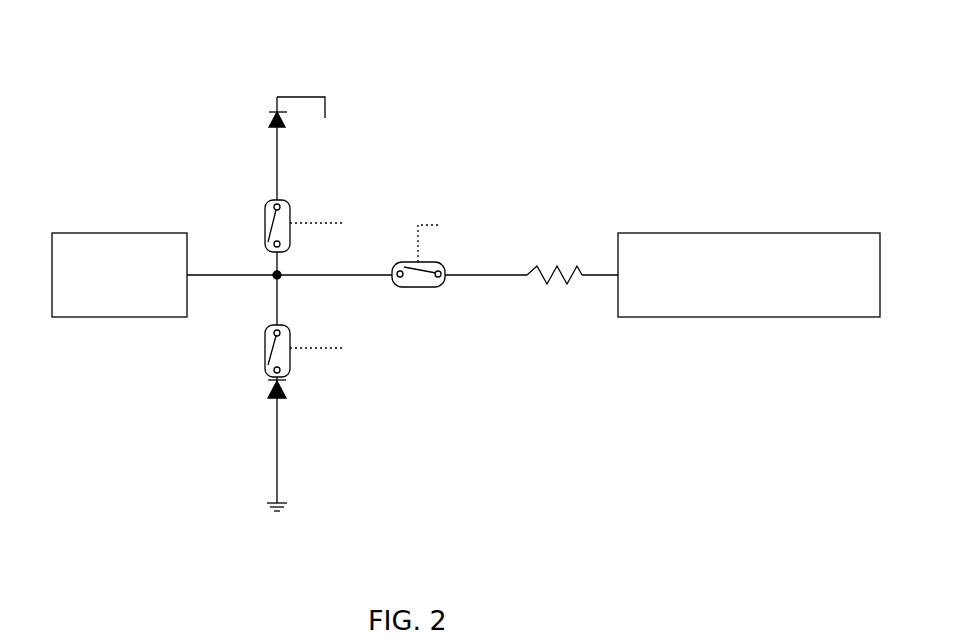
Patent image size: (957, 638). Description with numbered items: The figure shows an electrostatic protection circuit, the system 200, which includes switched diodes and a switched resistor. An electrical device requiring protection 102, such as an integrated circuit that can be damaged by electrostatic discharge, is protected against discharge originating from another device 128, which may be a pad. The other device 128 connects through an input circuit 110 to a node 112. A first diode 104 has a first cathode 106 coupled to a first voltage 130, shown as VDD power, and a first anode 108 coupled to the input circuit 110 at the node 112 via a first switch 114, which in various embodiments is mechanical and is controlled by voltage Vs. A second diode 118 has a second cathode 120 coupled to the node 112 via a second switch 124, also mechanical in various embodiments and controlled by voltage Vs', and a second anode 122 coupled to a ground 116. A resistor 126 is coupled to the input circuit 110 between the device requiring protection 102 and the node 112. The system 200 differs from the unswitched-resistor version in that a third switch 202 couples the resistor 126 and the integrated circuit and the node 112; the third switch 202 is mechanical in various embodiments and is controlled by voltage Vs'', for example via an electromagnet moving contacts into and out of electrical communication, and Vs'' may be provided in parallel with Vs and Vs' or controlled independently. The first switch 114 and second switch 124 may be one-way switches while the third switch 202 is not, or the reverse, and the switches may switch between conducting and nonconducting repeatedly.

The system 200 is at (466, 282).
The electrical device requiring protection 102 is at (670, 233).
The first diode 104 is at (270, 115).
The first cathode 106 is at (278, 110).
The first anode 108 is at (277, 163).
The input circuit 110 is at (208, 277).
The node 112 is at (275, 280).
The first switch 114 is at (265, 218).
The ground 116 is at (270, 503).
The second diode 118 is at (272, 408).
The second cathode 120 is at (310, 392).
The second anode 122 is at (277, 443).
The second switch 124 is at (265, 350).
The resistor 126 is at (540, 267).
The other device 128 is at (123, 233).
The first voltage 130 is at (388, 125).
The third switch 202 is at (418, 288).